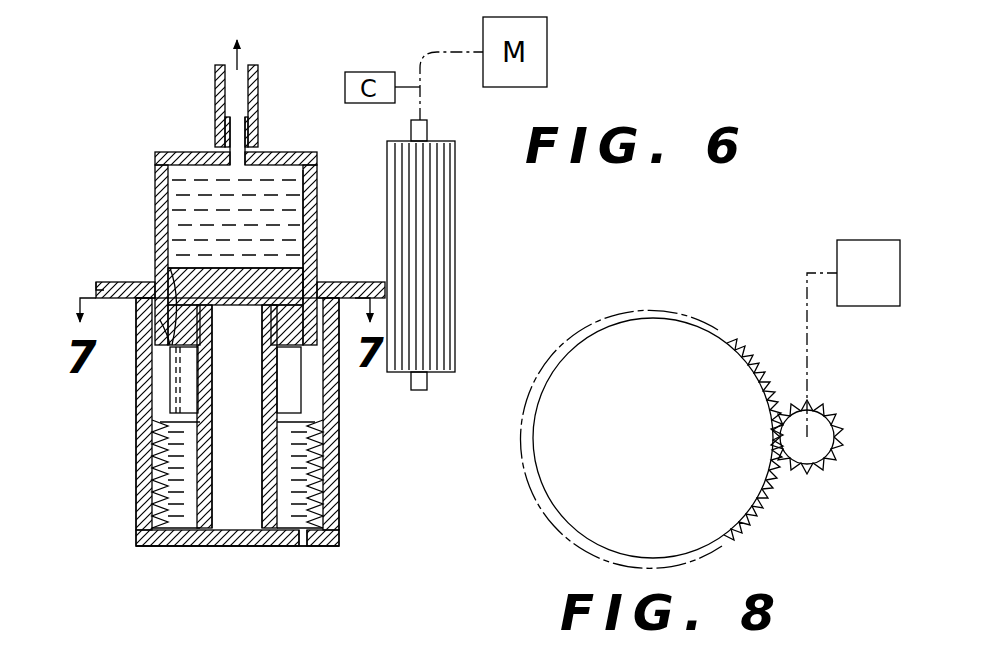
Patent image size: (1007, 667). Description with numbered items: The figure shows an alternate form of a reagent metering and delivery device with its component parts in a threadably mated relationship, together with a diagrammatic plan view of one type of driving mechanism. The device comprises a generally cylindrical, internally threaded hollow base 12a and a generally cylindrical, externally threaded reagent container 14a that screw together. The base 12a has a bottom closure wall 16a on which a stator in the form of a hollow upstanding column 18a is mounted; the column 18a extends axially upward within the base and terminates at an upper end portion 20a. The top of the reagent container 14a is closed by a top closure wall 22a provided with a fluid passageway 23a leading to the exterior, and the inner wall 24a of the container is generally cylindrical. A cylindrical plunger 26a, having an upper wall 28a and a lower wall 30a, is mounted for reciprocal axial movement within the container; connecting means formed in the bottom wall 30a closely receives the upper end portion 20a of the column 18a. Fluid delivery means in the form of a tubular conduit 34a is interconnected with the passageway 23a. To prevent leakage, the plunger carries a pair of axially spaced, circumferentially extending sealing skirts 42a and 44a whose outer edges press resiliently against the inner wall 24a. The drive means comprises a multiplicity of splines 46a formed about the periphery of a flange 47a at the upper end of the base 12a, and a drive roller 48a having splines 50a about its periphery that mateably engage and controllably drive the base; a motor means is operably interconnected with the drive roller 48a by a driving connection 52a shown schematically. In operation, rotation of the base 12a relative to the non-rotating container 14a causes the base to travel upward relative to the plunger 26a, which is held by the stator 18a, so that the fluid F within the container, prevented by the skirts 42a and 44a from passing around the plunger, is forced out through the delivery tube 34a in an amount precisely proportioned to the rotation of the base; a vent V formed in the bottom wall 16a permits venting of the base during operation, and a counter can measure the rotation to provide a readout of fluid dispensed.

In FIG. 6, the hollow base 12a is at (341, 482).
In FIG. 6, the reagent container 14a is at (156, 172).
In FIG. 6, the bottom closure wall 16a is at (313, 548).
In FIG. 6, the upstanding column 18a is at (268, 462).
In FIG. 6, the upper end portion 20a is at (236, 312).
In FIG. 6, the top closure wall 22a is at (274, 150).
In FIG. 6, the fluid passageway 23a is at (228, 126).
In FIG. 6, the inner wall 24a is at (310, 192).
In FIG. 6, the plunger 26a is at (212, 266).
In FIG. 6, the upper wall 28a is at (232, 274).
In FIG. 6, the lower wall 30a is at (182, 338).
In FIG. 6, the tubular conduit 34a is at (215, 80).
In FIG. 6, the sealing skirt 42a is at (170, 282).
In FIG. 6, the sealing skirt 44a is at (160, 345).
In FIG. 6, the splines 46a is at (98, 282).
In FIG. 8, the splines 46a is at (745, 358).
In FIG. 6, the flange 47a is at (355, 290).
In FIG. 8, the flange 47a is at (700, 325).
In FIG. 6, the drive roller 48a is at (458, 232).
In FIG. 8, the drive roller 48a is at (815, 455).
In FIG. 6, the splines 50a is at (440, 282).
In FIG. 8, the splines 50a is at (838, 418).
In FIG. 6, the driving connection 52a is at (447, 50).
In FIG. 8, the driving connection 52a is at (808, 338).
In FIG. 6, the fluid F is at (183, 218).
In FIG. 6, the vent V is at (303, 0).